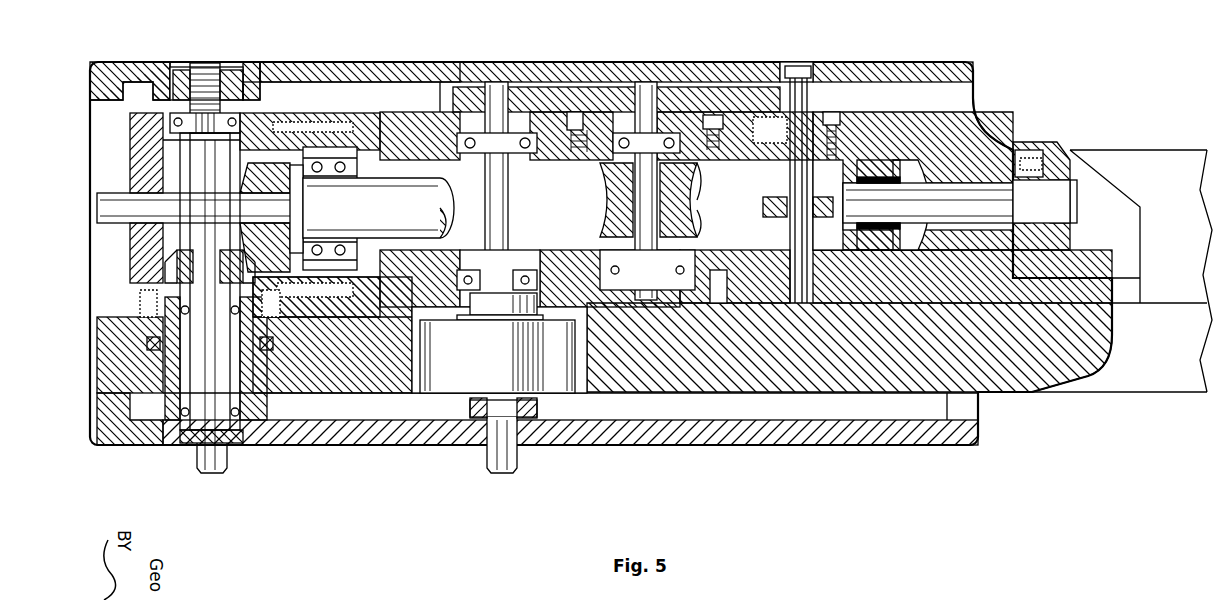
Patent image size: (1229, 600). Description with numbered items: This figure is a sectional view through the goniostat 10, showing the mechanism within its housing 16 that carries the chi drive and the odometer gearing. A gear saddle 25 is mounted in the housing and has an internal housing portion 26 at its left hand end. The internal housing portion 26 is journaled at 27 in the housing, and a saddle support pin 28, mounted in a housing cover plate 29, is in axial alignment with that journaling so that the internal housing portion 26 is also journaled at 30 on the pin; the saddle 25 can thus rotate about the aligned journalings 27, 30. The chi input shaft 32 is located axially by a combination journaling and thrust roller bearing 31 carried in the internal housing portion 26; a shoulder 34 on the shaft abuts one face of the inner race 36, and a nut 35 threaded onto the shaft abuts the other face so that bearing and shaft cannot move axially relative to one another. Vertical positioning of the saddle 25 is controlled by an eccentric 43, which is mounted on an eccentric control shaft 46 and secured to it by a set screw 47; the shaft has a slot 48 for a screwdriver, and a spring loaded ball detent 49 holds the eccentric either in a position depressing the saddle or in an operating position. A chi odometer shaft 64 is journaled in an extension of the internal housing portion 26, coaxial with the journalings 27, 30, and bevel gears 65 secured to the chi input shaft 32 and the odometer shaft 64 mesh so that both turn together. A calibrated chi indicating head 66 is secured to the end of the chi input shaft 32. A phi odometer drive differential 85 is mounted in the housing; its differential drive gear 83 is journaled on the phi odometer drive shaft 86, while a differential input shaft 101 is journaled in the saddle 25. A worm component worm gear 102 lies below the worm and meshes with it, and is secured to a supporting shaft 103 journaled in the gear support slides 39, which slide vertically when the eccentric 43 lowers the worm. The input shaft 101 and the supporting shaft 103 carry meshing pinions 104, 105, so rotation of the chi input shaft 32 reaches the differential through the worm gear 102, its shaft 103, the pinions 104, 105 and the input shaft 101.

The goniostat housing 10 is at (980, 118).
The housing 16 is at (990, 135).
The gear saddle 25 is at (935, 180).
The internal housing portion 26 is at (140, 122).
The journaling 27 is at (147, 342).
The saddle support pin 28 is at (193, 72).
The housing cover plate 29 is at (302, 78).
The journaling 30 is at (246, 92).
The combination journaling and thrust roller bearing 31 is at (358, 194).
The chi input shaft 32 is at (112, 195).
The shoulder 34 is at (358, 186).
The nut 35 is at (300, 163).
The inner race 36 is at (305, 242).
The gear support slides 39 is at (700, 165).
The eccentric 43 is at (765, 195).
The eccentric control shaft 46 is at (806, 75).
The set screw 47 is at (772, 215).
The slot 48 is at (796, 66).
The spring loaded ball detent 49 is at (828, 116).
The odometer shaft 64 is at (197, 456).
The bevel gears 65 is at (243, 172).
The calibrated chi indicating head 66 is at (1043, 140).
The differential drive gear 83 is at (533, 405).
The phi odometer drive differential 85 is at (432, 398).
The phi odometer drive shaft 86 is at (497, 462).
The differential input shaft 101 is at (510, 196).
The worm component worm gear 102 is at (604, 200).
The supporting shaft 103 is at (628, 243).
The pinion 104 is at (468, 85).
The pinion 105 is at (580, 88).